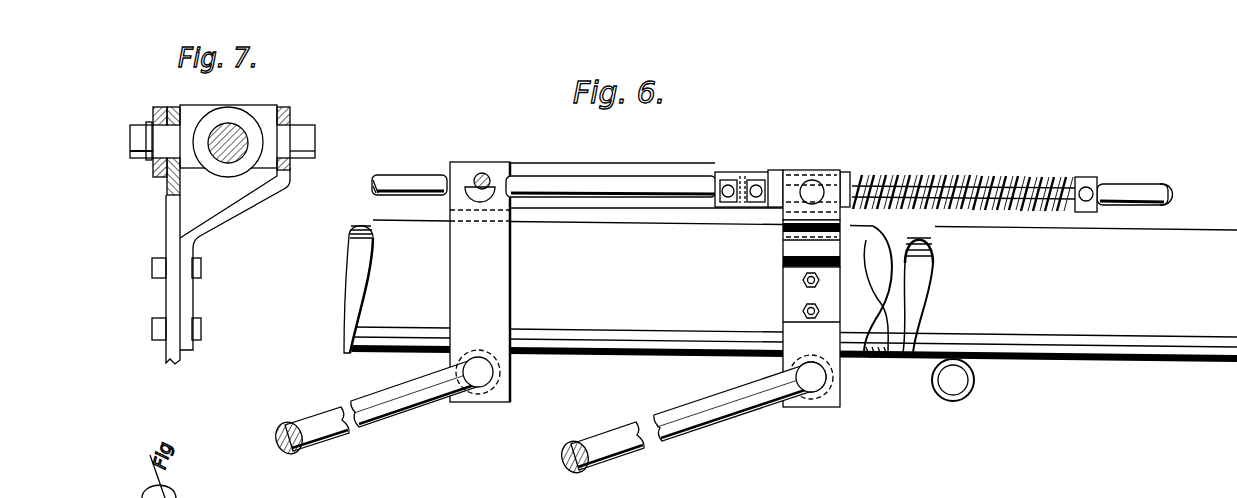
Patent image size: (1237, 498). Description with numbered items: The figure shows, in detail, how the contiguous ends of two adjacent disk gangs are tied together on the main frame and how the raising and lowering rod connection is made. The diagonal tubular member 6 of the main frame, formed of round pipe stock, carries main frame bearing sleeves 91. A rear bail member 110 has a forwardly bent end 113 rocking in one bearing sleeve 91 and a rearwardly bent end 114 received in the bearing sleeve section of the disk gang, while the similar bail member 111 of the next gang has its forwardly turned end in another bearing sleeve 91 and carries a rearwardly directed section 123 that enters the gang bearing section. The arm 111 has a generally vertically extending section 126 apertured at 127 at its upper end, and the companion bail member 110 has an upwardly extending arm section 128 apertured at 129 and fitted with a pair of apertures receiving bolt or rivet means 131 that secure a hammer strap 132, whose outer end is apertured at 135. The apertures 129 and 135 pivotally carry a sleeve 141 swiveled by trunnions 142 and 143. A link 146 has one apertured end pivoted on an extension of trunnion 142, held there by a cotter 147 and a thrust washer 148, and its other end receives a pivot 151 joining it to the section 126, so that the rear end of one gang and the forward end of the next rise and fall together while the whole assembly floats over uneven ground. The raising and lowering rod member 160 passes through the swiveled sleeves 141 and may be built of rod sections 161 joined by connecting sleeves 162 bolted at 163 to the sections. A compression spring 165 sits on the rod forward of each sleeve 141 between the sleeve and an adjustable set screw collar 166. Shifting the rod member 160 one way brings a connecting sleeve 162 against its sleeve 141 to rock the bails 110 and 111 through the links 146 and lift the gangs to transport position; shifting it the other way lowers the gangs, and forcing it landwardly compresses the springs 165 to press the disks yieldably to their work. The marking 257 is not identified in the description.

In FIG. 6, the tubular member 6 is at (1203, 238).
In FIG. 6, the main frame bearing sleeve 91 is at (485, 388).
In FIG. 6, the rear bail member 110 is at (717, 431).
In FIG. 6, the bail member 111 is at (412, 421).
In FIG. 6, the forwardly bent end 113 is at (812, 378).
In FIG. 6, the rearwardly bent end 114 is at (566, 443).
In FIG. 6, the rearwardly directed section 123 is at (290, 455).
In FIG. 6, the vertically extending section 126 is at (497, 270).
In FIG. 6, the aperture 127 is at (483, 172).
In FIG. 7, the upwardly extending arm section 128 is at (199, 296).
In FIG. 6, the upwardly extending arm section 128 is at (779, 312).
In FIG. 7, the aperture 129 is at (180, 130).
In FIG. 6, the bolt or rivet means 131 is at (800, 310).
In FIG. 7, the hammer strap 132 is at (234, 210).
In FIG. 6, the hammer strap 132 is at (782, 253).
In FIG. 7, the aperture 135 is at (284, 130).
In FIG. 7, the sleeve 141 is at (268, 126).
In FIG. 6, the sleeve 141 is at (775, 173).
In FIG. 7, the trunnion 142 is at (135, 128).
In FIG. 7, the trunnion 143 is at (311, 138).
In FIG. 6, the trunnion 143 is at (815, 185).
In FIG. 7, the link 146 is at (160, 178).
In FIG. 6, the link 146 is at (633, 170).
In FIG. 7, the cotter 147 is at (142, 158).
In FIG. 7, the thrust washer 148 is at (151, 120).
In FIG. 6, the pivot 151 is at (478, 193).
In FIG. 7, the raising and lowering rod member 160 is at (232, 134).
In FIG. 6, the raising and lowering rod member 160 is at (1153, 183).
In FIG. 6, the rod section 161 is at (388, 176).
In FIG. 6, the connecting sleeve 162 is at (733, 207).
In FIG. 6, the bolt 163 is at (757, 182).
In FIG. 6, the compression spring 165 is at (922, 177).
In FIG. 6, the adjustable set screw collar 166 is at (1085, 178).
In FIG. 6, the part 257 is at (454, 493).